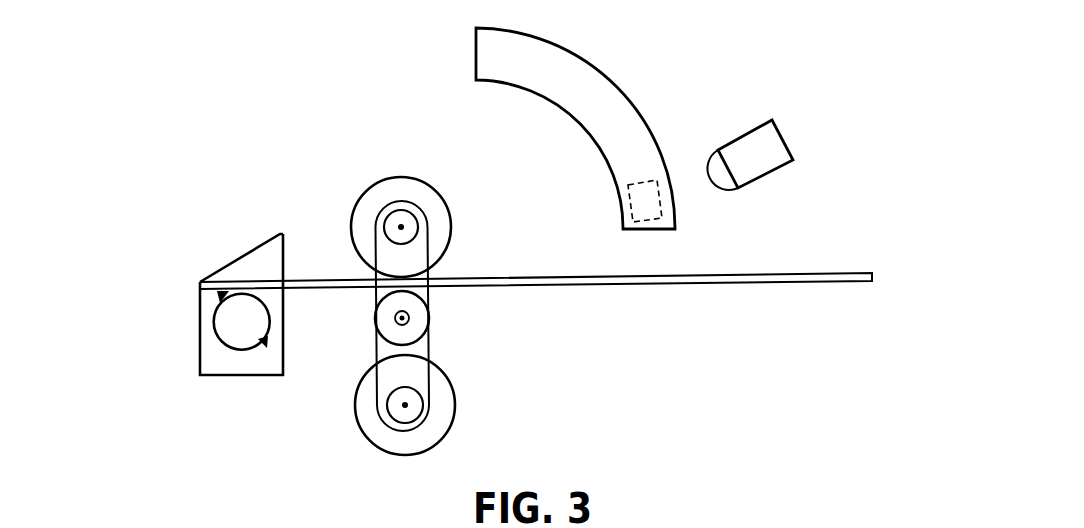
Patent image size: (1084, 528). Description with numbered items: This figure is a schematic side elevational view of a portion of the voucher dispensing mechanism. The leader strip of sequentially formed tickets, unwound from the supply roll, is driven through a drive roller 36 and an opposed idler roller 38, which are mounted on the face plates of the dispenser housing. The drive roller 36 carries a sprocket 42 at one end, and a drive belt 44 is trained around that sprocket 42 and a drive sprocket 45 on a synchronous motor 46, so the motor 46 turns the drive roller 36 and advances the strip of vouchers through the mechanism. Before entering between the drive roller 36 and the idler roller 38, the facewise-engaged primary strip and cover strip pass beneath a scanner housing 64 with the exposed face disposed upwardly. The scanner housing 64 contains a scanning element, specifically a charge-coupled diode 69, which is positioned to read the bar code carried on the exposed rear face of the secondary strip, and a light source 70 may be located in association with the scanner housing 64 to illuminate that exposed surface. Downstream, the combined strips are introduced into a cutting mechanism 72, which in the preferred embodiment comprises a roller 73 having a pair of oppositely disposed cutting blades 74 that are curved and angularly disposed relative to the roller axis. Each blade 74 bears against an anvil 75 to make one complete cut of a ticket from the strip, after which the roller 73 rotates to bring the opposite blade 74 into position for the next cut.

The drive roller 36 is at (366, 191).
The idler roller 38 is at (375, 319).
The sprocket 42 is at (414, 215).
The drive belt 44 is at (376, 250).
The drive sprocket 45 is at (403, 405).
The synchronous motor 46 is at (452, 421).
The scanner housing 64 is at (595, 62).
The charge-coupled diode 69 is at (631, 205).
The light source 70 is at (780, 130).
The cutting mechanism 72 is at (186, 243).
The roller 73 is at (223, 333).
The cutting blades 74 is at (220, 296).
The anvil 75 is at (257, 246).